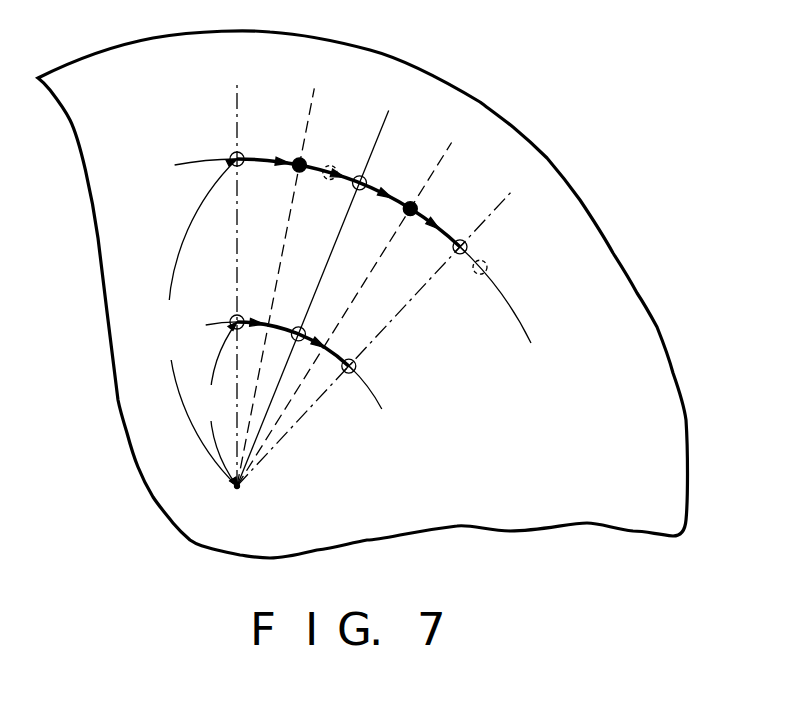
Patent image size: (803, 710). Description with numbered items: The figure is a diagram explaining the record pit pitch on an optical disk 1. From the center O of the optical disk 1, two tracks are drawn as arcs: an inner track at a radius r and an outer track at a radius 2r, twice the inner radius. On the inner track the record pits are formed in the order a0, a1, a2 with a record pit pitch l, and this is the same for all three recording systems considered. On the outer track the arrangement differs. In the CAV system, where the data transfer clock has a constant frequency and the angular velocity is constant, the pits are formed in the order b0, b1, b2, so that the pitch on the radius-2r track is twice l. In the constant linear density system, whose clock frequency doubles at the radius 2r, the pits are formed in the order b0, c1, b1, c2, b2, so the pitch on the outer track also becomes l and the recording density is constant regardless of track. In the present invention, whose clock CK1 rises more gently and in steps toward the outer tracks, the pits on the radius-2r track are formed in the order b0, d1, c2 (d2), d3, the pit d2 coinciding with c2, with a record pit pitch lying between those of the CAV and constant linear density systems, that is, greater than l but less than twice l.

The optical disk 1 is at (665, 337).
The record pit b0 is at (231, 153).
The record pit b1 is at (360, 176).
The record pit b2 is at (460, 240).
The record pit c1 is at (297, 157).
The record pit c2 is at (413, 202).
The record pit d1 is at (330, 166).
The record pit d2 is at (425, 130).
The record pit d3 is at (487, 268).
The record pit a0 is at (236, 315).
The record pit a1 is at (305, 327).
The record pit a2 is at (356, 366).
The center of the optical disk O is at (232, 503).
The radius r is at (218, 404).
The radius 2r is at (193, 322).
The record pit pitch l is at (277, 165).